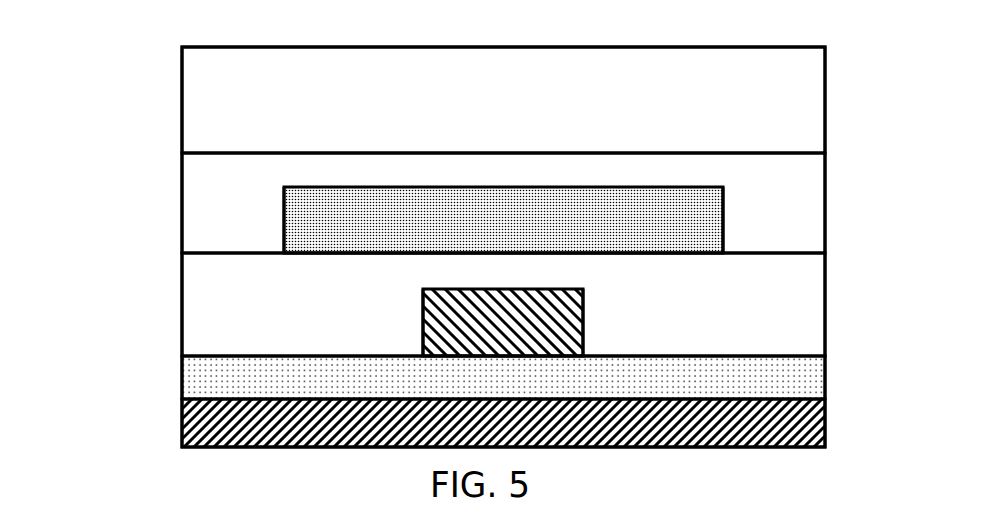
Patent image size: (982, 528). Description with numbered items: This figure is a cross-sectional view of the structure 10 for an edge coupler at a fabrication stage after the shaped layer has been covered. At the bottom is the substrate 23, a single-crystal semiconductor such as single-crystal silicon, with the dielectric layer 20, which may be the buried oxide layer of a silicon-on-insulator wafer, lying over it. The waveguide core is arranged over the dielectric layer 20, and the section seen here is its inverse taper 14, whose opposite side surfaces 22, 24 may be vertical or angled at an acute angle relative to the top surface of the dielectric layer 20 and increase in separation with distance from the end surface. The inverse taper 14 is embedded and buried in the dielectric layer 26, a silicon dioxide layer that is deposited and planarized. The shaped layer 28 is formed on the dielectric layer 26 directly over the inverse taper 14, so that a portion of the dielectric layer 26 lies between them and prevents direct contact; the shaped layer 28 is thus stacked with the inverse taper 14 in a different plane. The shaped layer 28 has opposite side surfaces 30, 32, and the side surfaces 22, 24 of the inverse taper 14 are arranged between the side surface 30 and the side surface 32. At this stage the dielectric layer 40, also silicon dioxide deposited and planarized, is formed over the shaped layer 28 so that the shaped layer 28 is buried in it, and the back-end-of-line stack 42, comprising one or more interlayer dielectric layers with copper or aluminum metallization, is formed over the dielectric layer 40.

The structure 10 is at (116, 217).
The inverse taper 14 is at (550, 305).
The dielectric layer 20 is at (215, 383).
The side surface 22 is at (423, 326).
The substrate 23 is at (215, 432).
The side surface 24 is at (583, 336).
The dielectric layer 26 is at (208, 302).
The shaped layer 28 is at (322, 217).
The side surface 30 is at (284, 243).
The side surface 32 is at (723, 221).
The dielectric layer 40 is at (790, 172).
The back-end-of-line stack 42 is at (787, 103).